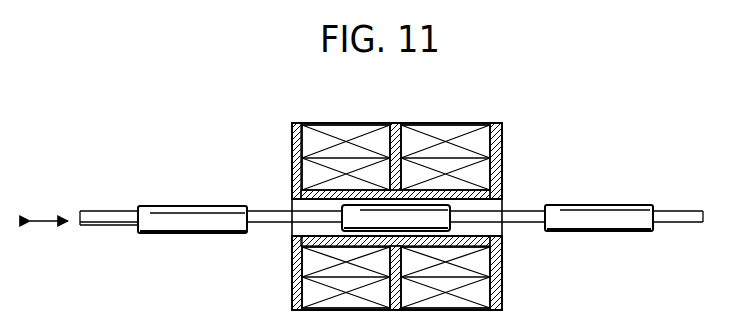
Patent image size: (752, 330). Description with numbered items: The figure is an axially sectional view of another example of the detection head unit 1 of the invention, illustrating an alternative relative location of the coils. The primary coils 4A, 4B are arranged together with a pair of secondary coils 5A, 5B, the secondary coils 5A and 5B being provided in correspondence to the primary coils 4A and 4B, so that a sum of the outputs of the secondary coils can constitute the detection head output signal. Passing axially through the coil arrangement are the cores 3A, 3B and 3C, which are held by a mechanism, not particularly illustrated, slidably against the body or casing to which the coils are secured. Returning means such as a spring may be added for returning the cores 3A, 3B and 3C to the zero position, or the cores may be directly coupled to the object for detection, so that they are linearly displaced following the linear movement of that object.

The detection head unit 1 is at (568, 122).
The core 3A is at (163, 215).
The core 3B is at (444, 229).
The core 3C is at (590, 210).
The primary coil 4A is at (292, 177).
The primary coil 4B is at (503, 159).
The secondary coil 5A is at (345, 133).
The secondary coil 5B is at (450, 130).